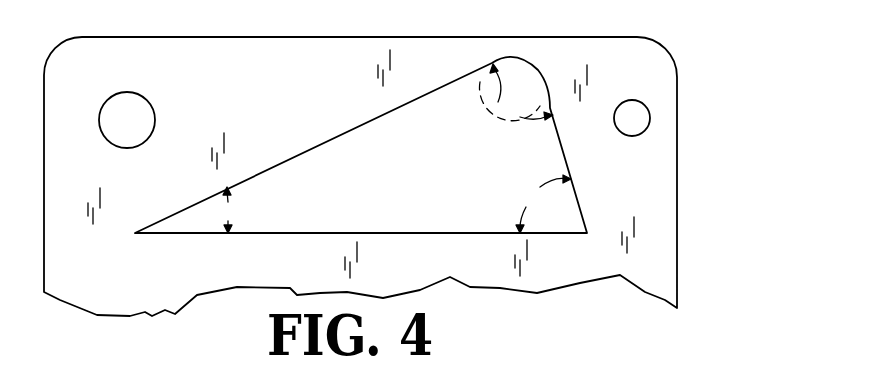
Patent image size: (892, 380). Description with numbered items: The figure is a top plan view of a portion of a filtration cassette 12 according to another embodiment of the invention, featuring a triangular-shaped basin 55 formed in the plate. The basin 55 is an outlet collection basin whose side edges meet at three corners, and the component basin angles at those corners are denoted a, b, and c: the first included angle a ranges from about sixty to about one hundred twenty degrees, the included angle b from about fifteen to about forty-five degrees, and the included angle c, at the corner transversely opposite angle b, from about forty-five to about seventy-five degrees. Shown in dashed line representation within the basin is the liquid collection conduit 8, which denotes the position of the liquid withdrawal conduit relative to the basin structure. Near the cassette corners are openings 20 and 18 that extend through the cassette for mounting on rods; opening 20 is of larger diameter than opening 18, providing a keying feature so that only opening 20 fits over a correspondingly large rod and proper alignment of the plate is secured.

The cassette 12 is at (660, 228).
The opening 20 is at (136, 115).
The opening 18 is at (628, 126).
The triangular-shaped basin 55 is at (356, 163).
The liquid collection conduit 8 is at (498, 127).
The first included angle a is at (521, 92).
The included angle b is at (229, 210).
The included angle c is at (543, 204).